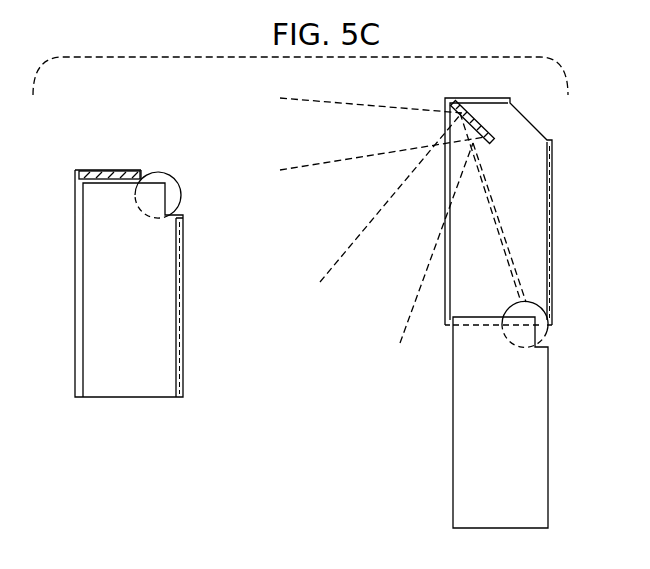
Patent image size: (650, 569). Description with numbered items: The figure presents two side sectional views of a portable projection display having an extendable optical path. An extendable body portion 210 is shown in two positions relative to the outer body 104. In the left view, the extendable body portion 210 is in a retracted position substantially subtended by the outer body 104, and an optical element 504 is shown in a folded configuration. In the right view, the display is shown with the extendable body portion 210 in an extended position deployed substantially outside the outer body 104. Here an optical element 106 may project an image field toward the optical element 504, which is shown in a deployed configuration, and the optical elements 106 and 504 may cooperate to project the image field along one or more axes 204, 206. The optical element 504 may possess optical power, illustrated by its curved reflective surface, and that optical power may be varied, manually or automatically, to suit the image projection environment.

The outer body 104 is at (183, 290).
The optical element 106 is at (181, 191).
The axis 204 is at (398, 338).
The axis 206 is at (368, 105).
The extendable body portion 210 is at (176, 328).
The optical element 504 is at (107, 170).